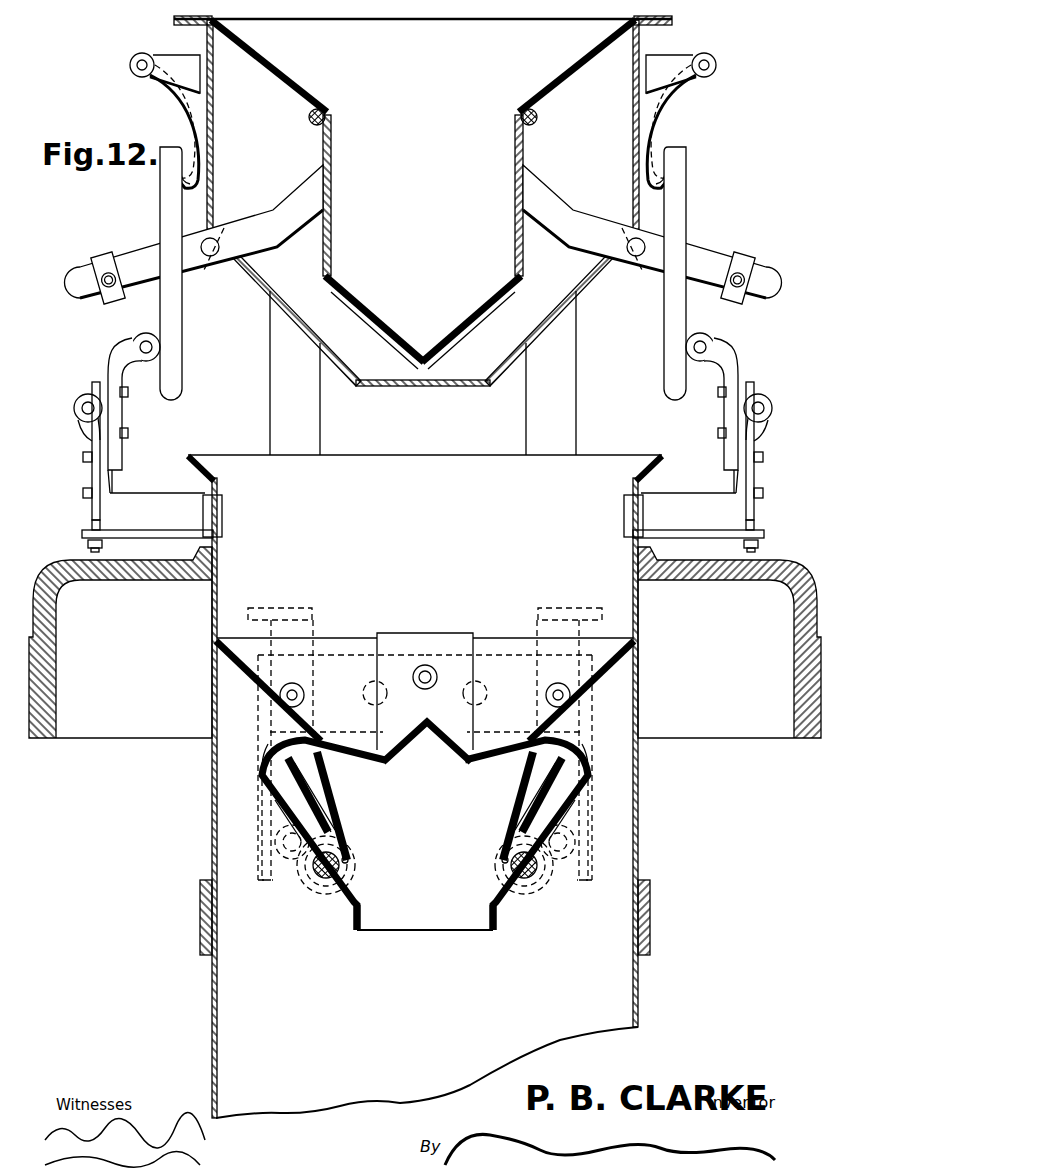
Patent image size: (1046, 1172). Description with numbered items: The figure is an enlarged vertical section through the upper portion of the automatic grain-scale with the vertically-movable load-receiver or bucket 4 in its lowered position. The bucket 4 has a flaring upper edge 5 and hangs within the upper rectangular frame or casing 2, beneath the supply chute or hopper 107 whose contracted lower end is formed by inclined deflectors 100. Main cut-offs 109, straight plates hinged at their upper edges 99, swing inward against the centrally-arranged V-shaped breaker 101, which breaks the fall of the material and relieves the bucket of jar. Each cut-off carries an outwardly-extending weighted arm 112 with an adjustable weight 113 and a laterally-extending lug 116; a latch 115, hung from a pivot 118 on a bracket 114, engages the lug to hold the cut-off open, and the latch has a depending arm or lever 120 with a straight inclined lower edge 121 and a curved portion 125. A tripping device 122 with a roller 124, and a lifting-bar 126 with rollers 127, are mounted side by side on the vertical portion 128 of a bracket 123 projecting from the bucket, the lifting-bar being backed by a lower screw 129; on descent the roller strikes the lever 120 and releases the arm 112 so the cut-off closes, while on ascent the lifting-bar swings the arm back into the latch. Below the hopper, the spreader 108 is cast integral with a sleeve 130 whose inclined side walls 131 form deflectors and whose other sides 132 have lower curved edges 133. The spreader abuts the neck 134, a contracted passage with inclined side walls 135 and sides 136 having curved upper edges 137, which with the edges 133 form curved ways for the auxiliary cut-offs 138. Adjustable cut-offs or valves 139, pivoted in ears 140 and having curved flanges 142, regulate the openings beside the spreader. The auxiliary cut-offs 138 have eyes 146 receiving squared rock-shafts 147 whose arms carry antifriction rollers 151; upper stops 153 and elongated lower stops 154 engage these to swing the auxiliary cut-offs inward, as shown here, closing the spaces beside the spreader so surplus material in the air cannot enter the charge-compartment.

The upper rectangular frame or casing 2 is at (52, 566).
The load-receiver or bucket 4 is at (210, 842).
The flaring upper edge 5 is at (196, 456).
The upper edges of main cut-offs 99 is at (314, 123).
The inclined deflectors 100 is at (298, 88).
The V-shaped breaker 101 is at (378, 311).
The supply chute or hopper 107 is at (423, 65).
The spreader 108 is at (414, 745).
The main cut-offs 109 is at (333, 226).
The weighted arms 112 is at (255, 212).
The adjustable weights 113 is at (105, 254).
The brackets or supports 114 is at (168, 58).
The latches 115 is at (183, 178).
The lug or projection 116 is at (212, 258).
The pivot 118 is at (140, 74).
The arm or lever 120 is at (181, 320).
The straight lower edge 121 is at (150, 334).
The tripping device 122 is at (90, 448).
The bracket 123 is at (155, 504).
The roller or antifriction-wheel 124 is at (132, 343).
The curved portion 125 is at (178, 112).
The lifting-bars 126 is at (80, 432).
The rollers 127 is at (84, 395).
The vertical portion of bracket 128 is at (106, 474).
The lower screw 129 is at (106, 540).
The sleeve or frame 130 is at (436, 678).
The inclined side walls 131 is at (236, 658).
The sides of sleeve 132 is at (346, 634).
The curved edges 133 is at (350, 738).
The neck 134 is at (425, 856).
The inclined side walls of neck 135 is at (338, 802).
The sides of neck 136 is at (437, 932).
The curved upper edges 137 is at (340, 766).
The auxiliary cut-offs 138 is at (270, 756).
The adjustable cut-offs or valves 139 is at (282, 782).
The ears 140 is at (336, 828).
The curved tops or flanges 142 is at (320, 740).
The eyes 146 is at (326, 880).
The rock-shafts or pintles 147 is at (348, 862).
The antifriction wheels or rollers 151 is at (288, 862).
The upper stops 153 is at (263, 608).
The lower stops 154 is at (258, 846).